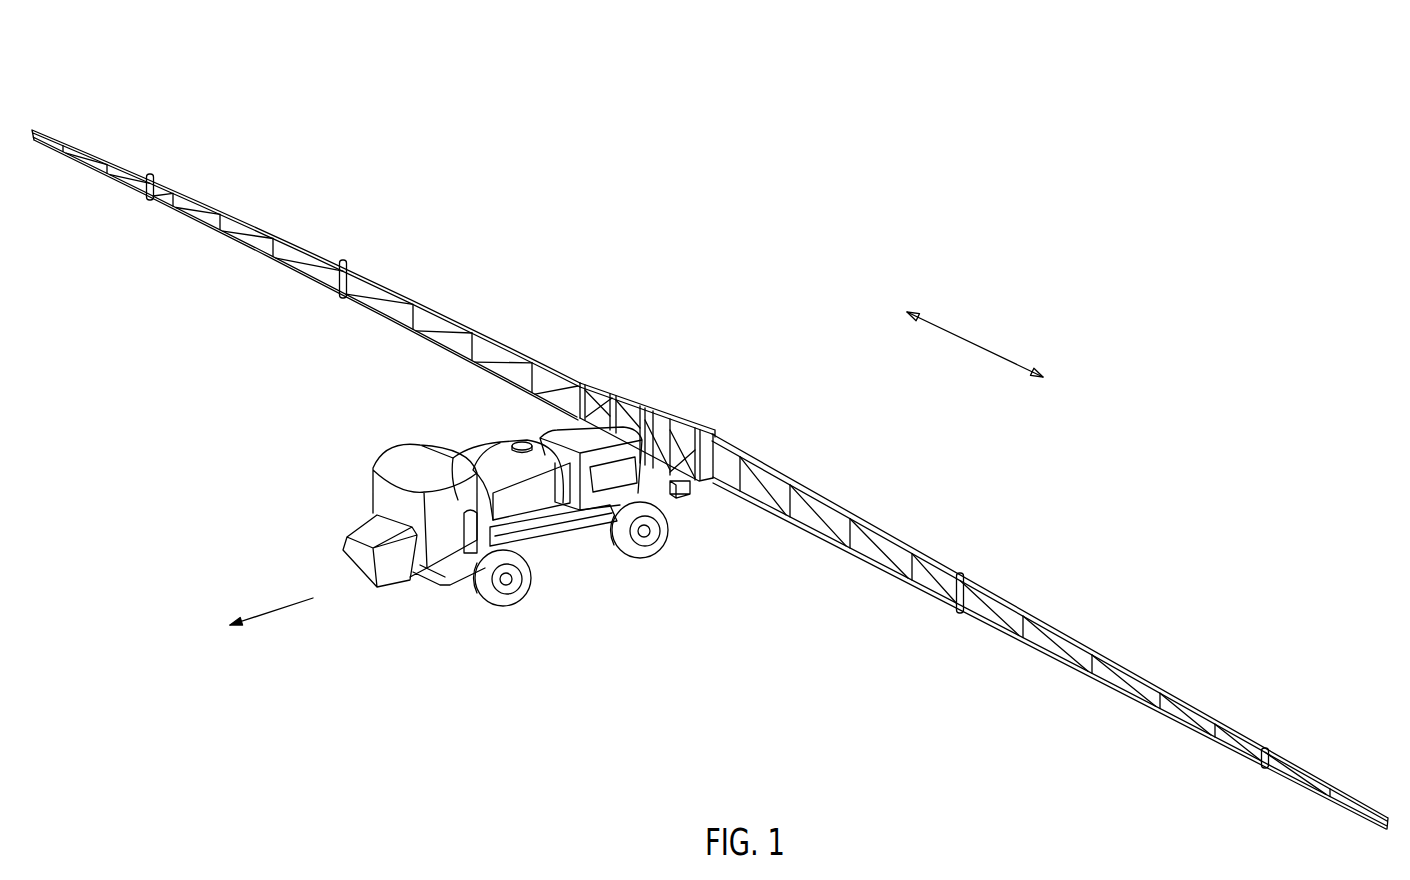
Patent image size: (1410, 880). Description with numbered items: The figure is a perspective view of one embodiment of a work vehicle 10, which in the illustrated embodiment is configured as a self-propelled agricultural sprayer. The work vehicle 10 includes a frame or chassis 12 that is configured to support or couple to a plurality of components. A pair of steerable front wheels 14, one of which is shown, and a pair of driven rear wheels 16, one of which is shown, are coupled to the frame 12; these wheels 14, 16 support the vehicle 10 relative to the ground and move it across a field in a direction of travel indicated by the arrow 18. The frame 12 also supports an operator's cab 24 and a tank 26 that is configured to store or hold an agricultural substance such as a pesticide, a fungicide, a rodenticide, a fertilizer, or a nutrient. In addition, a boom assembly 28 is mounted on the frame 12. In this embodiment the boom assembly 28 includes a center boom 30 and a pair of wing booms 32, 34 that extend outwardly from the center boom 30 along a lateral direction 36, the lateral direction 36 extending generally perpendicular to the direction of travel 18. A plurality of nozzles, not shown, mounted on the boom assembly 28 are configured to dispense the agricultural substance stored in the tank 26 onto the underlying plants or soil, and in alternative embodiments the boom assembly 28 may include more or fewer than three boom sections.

The work vehicle 10 is at (130, 127).
The frame 12 is at (548, 548).
The front wheels 14 is at (500, 607).
The rear wheels 16 is at (652, 558).
The direction of travel 18 is at (275, 612).
The operator's cab 24 is at (398, 470).
The tank 26 is at (487, 455).
The boom assembly 28 is at (767, 437).
The center boom 30 is at (663, 405).
The wing boom 32 is at (1085, 643).
The wing boom 34 is at (232, 217).
The lateral direction 36 is at (975, 342).